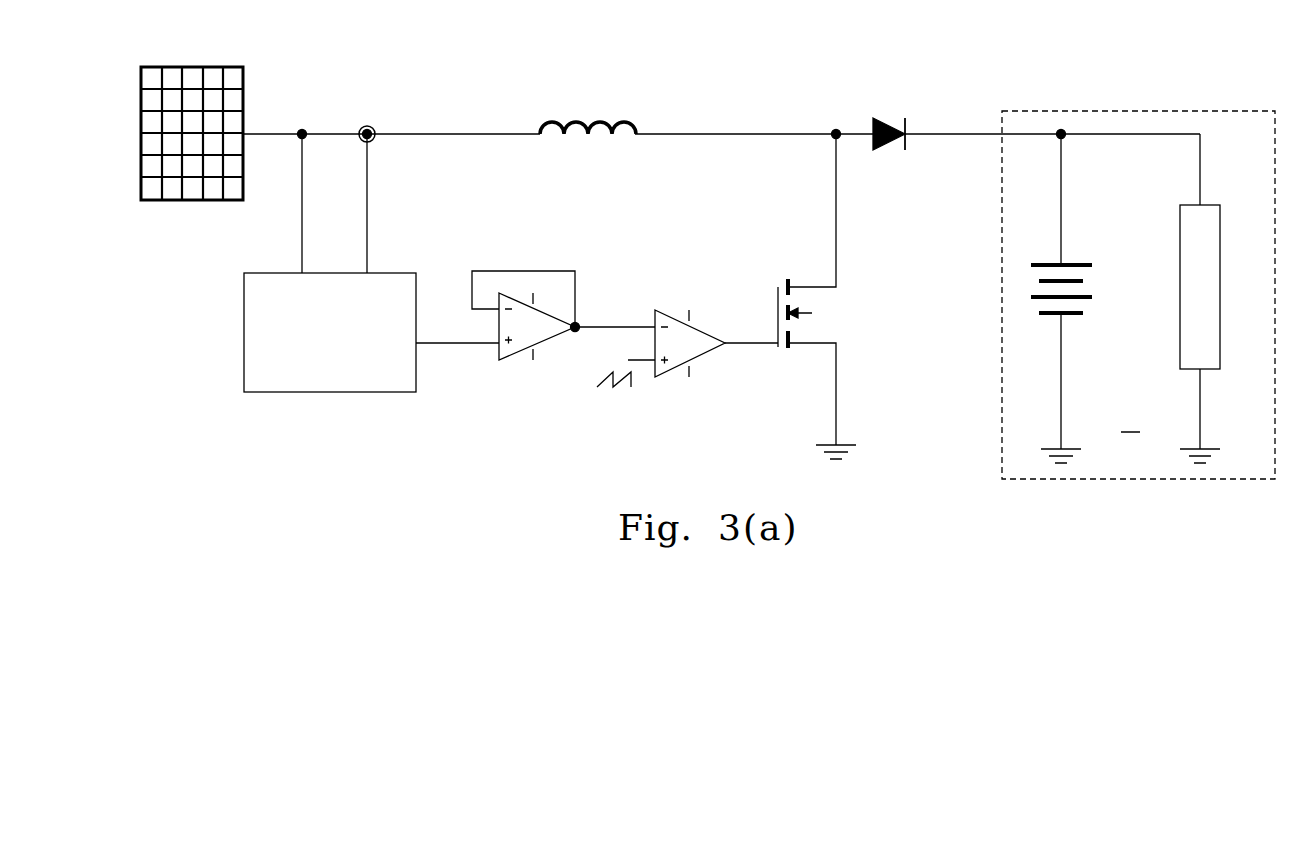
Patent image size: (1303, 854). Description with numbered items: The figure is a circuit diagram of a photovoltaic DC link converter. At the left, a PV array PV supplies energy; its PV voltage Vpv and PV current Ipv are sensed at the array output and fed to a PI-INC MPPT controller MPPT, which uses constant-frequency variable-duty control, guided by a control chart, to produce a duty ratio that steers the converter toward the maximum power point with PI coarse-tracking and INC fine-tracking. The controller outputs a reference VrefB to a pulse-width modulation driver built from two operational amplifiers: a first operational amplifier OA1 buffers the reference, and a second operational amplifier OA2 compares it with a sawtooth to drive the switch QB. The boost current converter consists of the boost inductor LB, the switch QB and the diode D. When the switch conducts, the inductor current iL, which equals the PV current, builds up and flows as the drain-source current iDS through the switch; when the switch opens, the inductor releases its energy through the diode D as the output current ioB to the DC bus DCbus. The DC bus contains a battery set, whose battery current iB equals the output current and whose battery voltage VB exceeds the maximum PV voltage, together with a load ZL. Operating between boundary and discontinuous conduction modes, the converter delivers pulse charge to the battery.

The PV array PV is at (192, 175).
The PV voltage Vpv is at (311, 179).
The PV current Ipv is at (373, 179).
The PI-INC MPPT controller MPPT is at (330, 332).
The reference voltage VrefB is at (457, 362).
The operational amplifier OA1 is at (563, 315).
The operational amplifier OA2 is at (687, 348).
The switch QB is at (831, 295).
The boost inductor LB is at (588, 108).
The inductor current iL is at (745, 119).
The drain-source current iDS is at (822, 168).
The diode D is at (889, 114).
The output current ioB is at (968, 117).
The DC bus DCbus is at (1138, 277).
The battery current iB is at (1045, 170).
The battery voltage VB is at (1083, 297).
The load ZL is at (1223, 298).